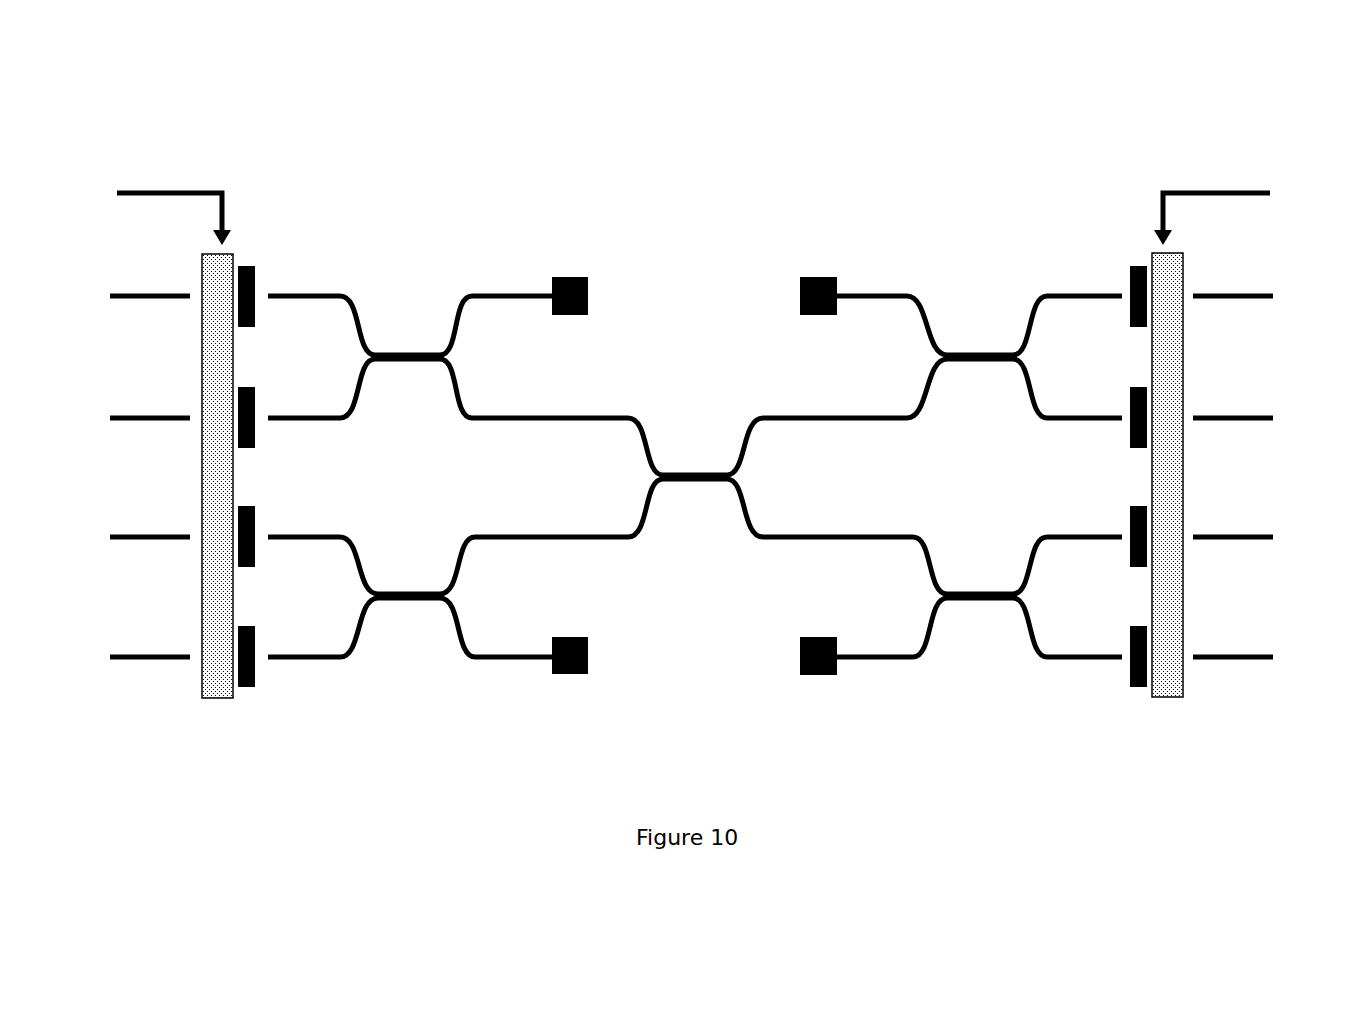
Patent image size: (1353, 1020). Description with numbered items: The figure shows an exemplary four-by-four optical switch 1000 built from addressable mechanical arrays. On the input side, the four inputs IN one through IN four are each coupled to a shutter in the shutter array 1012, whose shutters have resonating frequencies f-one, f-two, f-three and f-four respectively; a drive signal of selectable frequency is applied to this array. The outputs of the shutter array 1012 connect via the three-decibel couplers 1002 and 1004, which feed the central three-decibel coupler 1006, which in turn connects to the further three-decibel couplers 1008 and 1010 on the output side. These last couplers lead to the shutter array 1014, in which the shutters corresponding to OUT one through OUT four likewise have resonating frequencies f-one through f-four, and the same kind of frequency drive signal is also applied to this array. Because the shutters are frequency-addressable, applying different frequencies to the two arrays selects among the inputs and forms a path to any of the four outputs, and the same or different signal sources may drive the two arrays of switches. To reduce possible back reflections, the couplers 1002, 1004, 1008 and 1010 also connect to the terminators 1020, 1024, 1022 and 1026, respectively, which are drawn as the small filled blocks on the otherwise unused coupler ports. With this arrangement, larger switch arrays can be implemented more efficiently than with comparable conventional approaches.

The 4×4 optical switch 1000 is at (353, 70).
The 3 dB coupler 1002 is at (428, 339).
The 3 dB coupler 1004 is at (429, 579).
The 3 dB coupler 1006 is at (723, 459).
The 3 dB coupler 1008 is at (1004, 339).
The 3 dB coupler 1010 is at (1006, 579).
The shutter array 1012 is at (250, 708).
The shutter array 1014 is at (1113, 700).
The terminator 1020 is at (568, 278).
The terminator 1022 is at (824, 278).
The terminator 1024 is at (588, 660).
The terminator 1026 is at (800, 663).